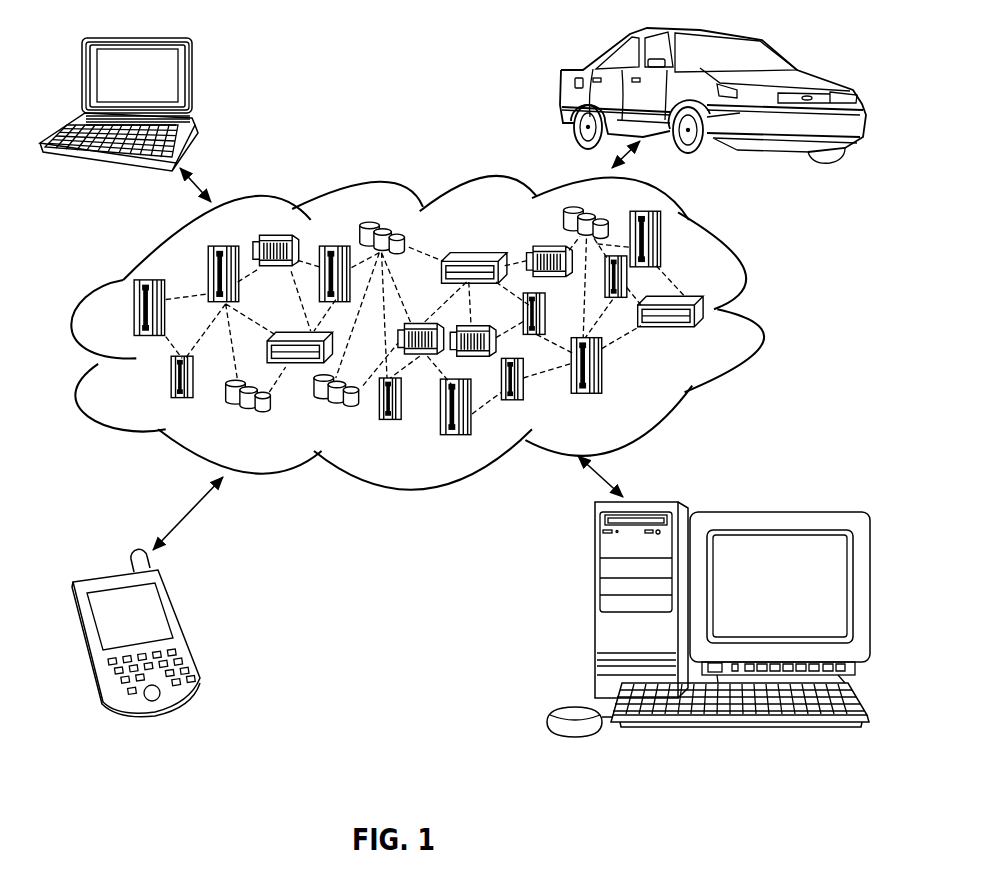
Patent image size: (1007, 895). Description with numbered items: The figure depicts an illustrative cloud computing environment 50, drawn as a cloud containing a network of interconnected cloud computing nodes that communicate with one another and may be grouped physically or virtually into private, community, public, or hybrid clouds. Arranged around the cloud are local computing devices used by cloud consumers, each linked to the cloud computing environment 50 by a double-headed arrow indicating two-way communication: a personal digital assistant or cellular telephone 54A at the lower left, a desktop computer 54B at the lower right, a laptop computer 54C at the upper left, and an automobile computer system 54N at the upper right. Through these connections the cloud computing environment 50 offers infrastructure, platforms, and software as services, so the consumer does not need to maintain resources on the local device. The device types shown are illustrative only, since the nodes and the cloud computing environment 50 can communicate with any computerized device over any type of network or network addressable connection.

The cloud computing environment 50 is at (463, 333).
The personal digital assistant (PDA) or cellular telephone 54A is at (181, 628).
The desktop computer 54B is at (595, 607).
The laptop computer 54C is at (192, 82).
The automobile computer system 54N is at (558, 78).